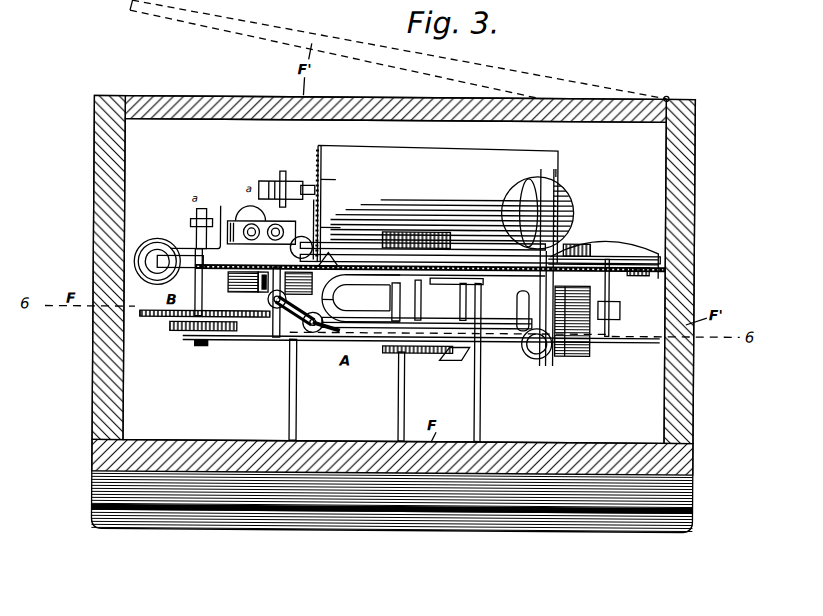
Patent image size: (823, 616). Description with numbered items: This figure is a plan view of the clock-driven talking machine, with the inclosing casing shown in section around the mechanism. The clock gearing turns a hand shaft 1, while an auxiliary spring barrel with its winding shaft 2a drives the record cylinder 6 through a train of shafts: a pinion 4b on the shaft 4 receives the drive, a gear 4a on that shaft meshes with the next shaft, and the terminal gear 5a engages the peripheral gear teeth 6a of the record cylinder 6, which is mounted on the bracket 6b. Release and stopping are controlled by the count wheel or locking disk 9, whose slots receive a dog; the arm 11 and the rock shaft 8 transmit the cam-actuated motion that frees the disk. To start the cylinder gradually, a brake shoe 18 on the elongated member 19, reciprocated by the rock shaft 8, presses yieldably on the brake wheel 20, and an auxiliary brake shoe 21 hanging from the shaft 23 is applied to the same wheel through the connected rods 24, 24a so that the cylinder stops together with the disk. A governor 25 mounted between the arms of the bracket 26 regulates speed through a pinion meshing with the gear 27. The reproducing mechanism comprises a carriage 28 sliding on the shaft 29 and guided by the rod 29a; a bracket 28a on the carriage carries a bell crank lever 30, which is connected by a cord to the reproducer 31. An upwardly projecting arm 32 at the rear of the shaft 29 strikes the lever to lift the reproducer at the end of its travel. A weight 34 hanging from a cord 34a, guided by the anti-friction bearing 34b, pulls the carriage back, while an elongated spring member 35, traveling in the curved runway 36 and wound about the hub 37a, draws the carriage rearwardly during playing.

The hand shaft 1 is at (398, 405).
The winding shaft 2a is at (290, 402).
The shaft 4 is at (240, 320).
The gear 4a is at (148, 319).
The pinion 4b is at (178, 333).
The terminal gear 5a is at (327, 228).
The record cylinder 6 is at (437, 204).
The peripheral gear teeth 6a is at (324, 190).
The bracket 6b is at (279, 180).
The rock shaft 8 is at (448, 308).
The count wheel or locking disk 9 is at (320, 218).
The arm 11 is at (378, 282).
The brake shoe 18 is at (247, 293).
The elongated member 19 is at (336, 300).
The brake wheel 20 is at (263, 293).
The auxiliary brake shoe 21 is at (308, 290).
The shaft 23 is at (272, 332).
The rod 24 is at (298, 328).
The rod 24a is at (336, 341).
The governor 25 is at (322, 241).
The bracket 26 is at (240, 222).
The gear 27 is at (338, 256).
The carriage 28 is at (580, 335).
The bracket 28a is at (597, 297).
The shaft 29 is at (522, 341).
The rod 29a is at (517, 300).
The bell crank lever 30 is at (524, 262).
The reproducer 31 is at (566, 223).
The arm 32 is at (596, 248).
The weight 34 is at (156, 243).
The cord 34a is at (453, 284).
The anti-friction bearing 34b is at (155, 282).
The elongated spring member 35 is at (483, 228).
The curved runway 36 is at (616, 249).
The hub 37a is at (433, 228).